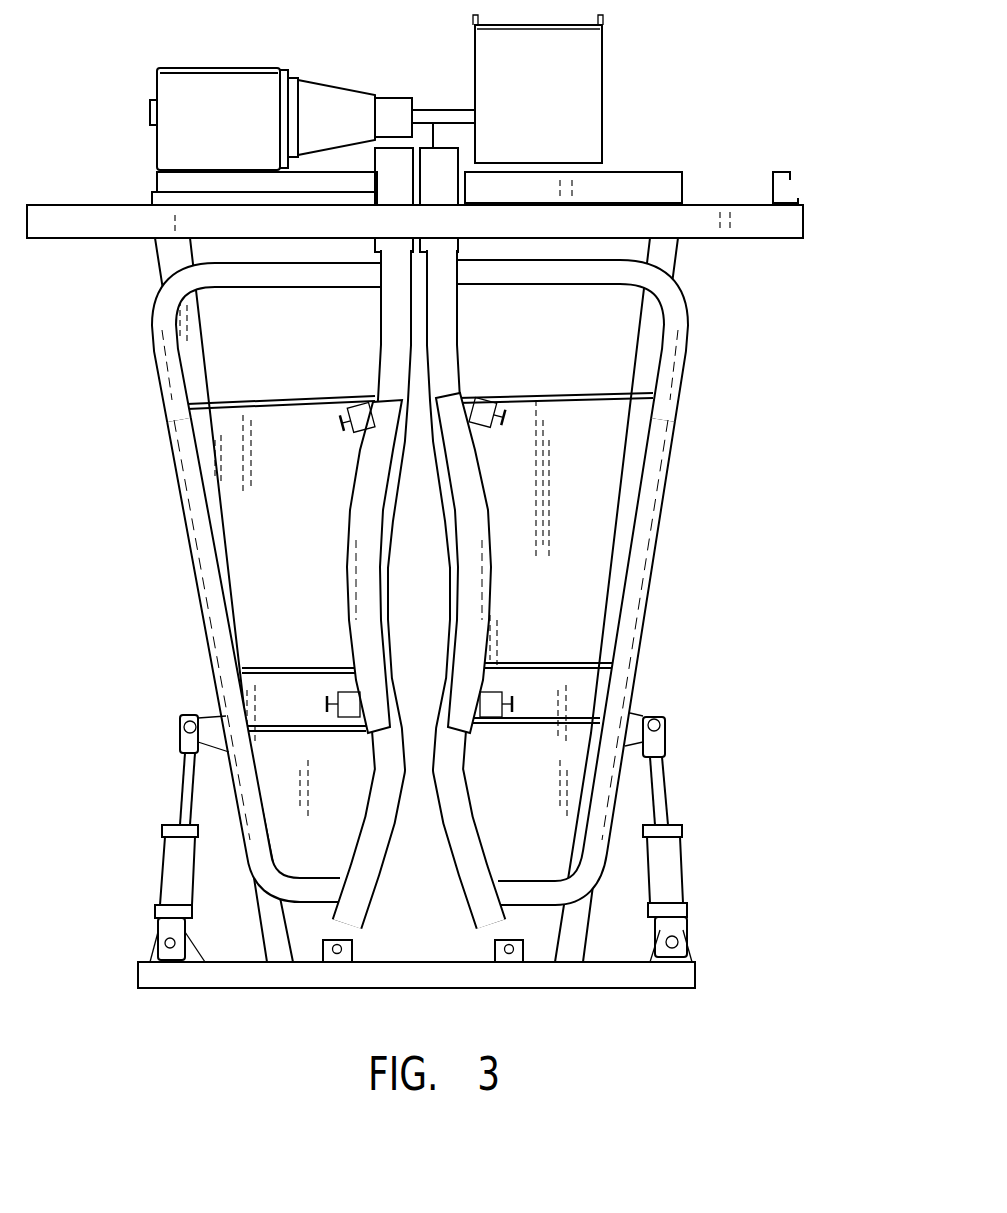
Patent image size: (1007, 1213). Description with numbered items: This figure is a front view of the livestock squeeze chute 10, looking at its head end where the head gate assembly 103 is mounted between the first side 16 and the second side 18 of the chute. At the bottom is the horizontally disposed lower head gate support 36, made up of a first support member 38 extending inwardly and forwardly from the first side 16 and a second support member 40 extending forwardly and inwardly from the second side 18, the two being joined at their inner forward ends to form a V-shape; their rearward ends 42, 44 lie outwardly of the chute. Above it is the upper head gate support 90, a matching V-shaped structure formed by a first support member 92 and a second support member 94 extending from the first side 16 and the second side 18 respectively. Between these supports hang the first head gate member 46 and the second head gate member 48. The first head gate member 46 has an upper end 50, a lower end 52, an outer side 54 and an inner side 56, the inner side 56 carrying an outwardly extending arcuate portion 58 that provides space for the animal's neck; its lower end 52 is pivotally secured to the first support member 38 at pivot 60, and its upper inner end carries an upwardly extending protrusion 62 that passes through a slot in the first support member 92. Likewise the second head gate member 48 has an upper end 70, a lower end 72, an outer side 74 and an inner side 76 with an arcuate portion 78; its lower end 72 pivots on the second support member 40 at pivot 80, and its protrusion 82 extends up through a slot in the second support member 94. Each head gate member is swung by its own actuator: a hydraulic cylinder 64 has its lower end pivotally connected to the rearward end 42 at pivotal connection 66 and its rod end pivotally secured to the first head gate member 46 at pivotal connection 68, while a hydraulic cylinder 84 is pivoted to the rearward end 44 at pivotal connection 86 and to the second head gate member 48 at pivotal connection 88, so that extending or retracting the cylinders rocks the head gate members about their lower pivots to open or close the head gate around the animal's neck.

The livestock squeeze chute 10 is at (706, 140).
The first side 16 is at (157, 537).
The second side 18 is at (672, 558).
The lower head gate support 36 is at (288, 1000).
The first support member 38 is at (222, 988).
The second support member 40 is at (622, 990).
The rearward end 42 is at (137, 976).
The rearward end 44 is at (700, 972).
The first head gate member 46 is at (192, 609).
The second head gate member 48 is at (652, 604).
The upper end 50 is at (318, 278).
The lower end 52 is at (410, 975).
The outer side 54 is at (200, 650).
The inner side 56 is at (410, 732).
The arcuate portion 58 is at (350, 589).
The pivot 60 is at (338, 963).
The protrusion 62 is at (394, 160).
The hydraulic cylinder 64 is at (162, 866).
The pivotal connection 66 is at (158, 940).
The pivotal connection 68 is at (180, 724).
The upper end 70 is at (575, 290).
The lower end 72 is at (540, 966).
The outer side 74 is at (665, 479).
The inner side 76 is at (428, 752).
The arcuate portion 78 is at (490, 553).
The pivot 80 is at (508, 963).
The protrusion 82 is at (450, 173).
The hydraulic cylinder 84 is at (682, 850).
The pivotal connection 86 is at (687, 940).
The pivotal connection 88 is at (665, 722).
The upper head gate support 90 is at (722, 197).
The first support member 92 is at (152, 222).
The second support member 94 is at (673, 220).
The head gate assembly 103 is at (686, 414).